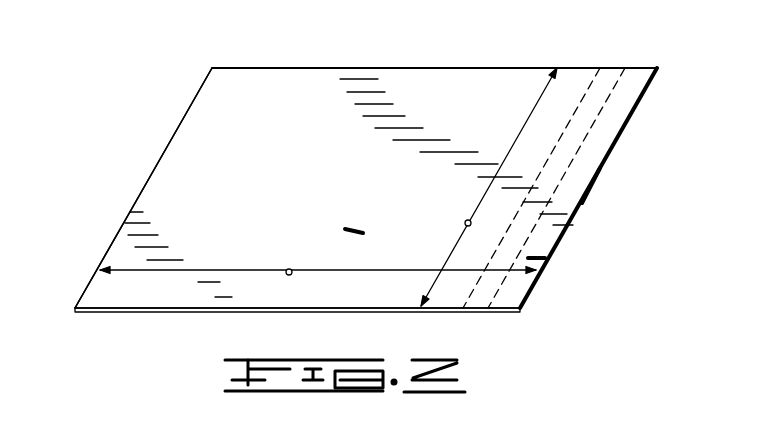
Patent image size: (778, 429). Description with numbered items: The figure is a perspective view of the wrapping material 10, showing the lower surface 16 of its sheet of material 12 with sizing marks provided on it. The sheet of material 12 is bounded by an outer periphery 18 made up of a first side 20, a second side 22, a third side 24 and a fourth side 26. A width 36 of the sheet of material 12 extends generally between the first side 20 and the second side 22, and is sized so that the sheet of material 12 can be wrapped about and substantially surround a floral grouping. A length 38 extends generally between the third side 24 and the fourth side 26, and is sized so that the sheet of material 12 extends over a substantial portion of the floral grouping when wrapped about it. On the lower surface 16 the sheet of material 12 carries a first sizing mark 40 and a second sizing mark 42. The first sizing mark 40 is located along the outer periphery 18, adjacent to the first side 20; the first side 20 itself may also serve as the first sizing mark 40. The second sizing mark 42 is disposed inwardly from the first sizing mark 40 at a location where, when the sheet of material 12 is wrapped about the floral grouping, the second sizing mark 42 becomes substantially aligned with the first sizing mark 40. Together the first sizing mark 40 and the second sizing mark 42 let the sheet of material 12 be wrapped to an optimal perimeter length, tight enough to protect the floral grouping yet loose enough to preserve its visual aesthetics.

The wrapping material 10 is at (659, 66).
The sheet of material 12 is at (487, 68).
The lower surface 16 is at (203, 132).
The outer periphery 18 is at (622, 137).
The first side 20 is at (582, 203).
The second side 22 is at (105, 253).
The third side 24 is at (355, 68).
The fourth side 26 is at (188, 313).
The width 36 is at (287, 269).
The length 38 is at (466, 221).
The first sizing mark 40 is at (545, 256).
The second sizing mark 42 is at (350, 228).